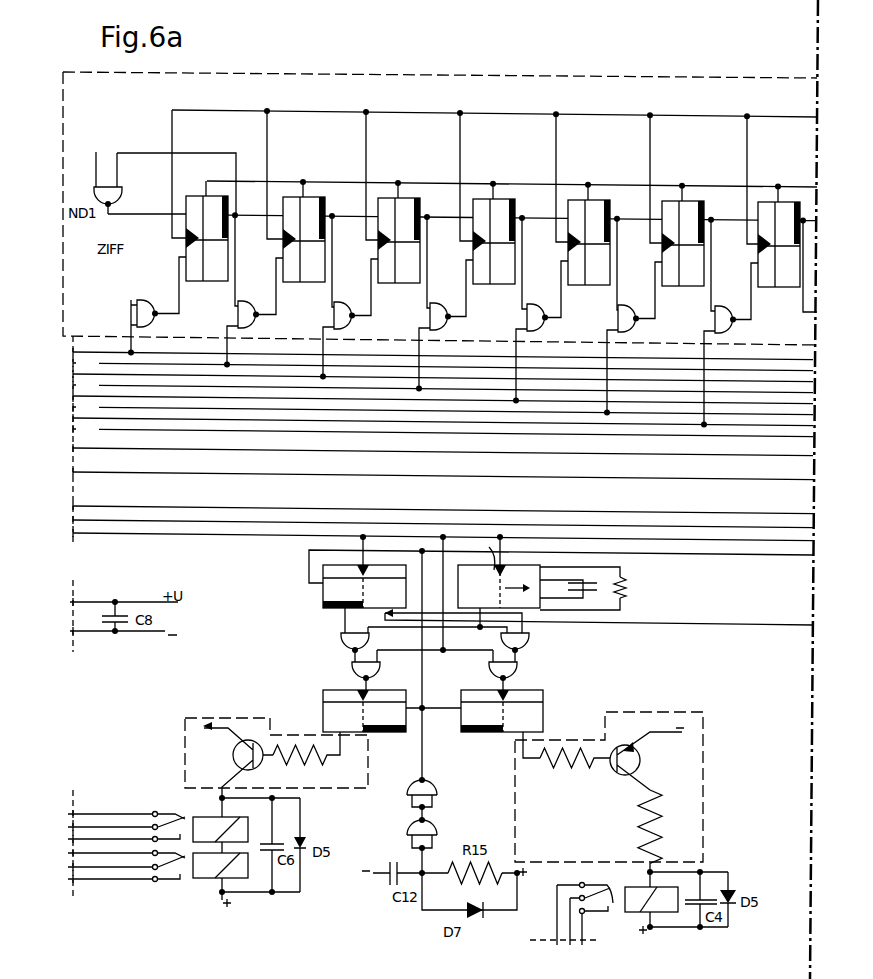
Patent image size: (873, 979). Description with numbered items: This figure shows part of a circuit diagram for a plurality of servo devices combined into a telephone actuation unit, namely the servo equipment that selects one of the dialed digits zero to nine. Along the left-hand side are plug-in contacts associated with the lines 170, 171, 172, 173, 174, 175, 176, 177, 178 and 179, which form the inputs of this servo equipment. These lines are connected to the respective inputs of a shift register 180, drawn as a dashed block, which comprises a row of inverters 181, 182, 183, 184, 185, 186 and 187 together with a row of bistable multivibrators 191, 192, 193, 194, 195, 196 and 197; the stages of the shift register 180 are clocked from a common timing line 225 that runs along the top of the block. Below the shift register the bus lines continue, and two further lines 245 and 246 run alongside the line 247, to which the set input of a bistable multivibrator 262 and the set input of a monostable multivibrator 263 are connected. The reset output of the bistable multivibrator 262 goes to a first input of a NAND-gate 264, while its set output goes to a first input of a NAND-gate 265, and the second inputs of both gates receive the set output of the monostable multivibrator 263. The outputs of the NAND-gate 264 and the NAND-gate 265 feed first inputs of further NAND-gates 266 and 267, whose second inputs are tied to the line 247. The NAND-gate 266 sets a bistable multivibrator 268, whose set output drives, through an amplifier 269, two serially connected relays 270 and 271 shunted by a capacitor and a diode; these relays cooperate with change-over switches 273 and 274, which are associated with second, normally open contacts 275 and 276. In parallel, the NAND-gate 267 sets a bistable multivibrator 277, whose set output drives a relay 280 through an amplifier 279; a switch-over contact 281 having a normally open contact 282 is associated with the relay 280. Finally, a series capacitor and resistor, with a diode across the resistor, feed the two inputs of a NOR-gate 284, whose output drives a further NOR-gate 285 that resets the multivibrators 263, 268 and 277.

The line 170 is at (430, 352).
The line 171 is at (443, 363).
The line 172 is at (430, 374).
The line 173 is at (443, 385).
The line 174 is at (430, 396).
The line 175 is at (443, 407).
The line 176 is at (430, 418).
The line 177 is at (443, 429).
The line 178 is at (430, 448).
The line 179 is at (443, 467).
The shift register 180 is at (648, 72).
The inverter 181 is at (158, 306).
The inverter 182 is at (256, 291).
The inverter 183 is at (352, 298).
The inverter 184 is at (448, 304).
The inverter 185 is at (545, 311).
The inverter 186 is at (636, 317).
The inverter 187 is at (733, 324).
The bistable multivibrator 191 is at (186, 270).
The bistable multivibrator 192 is at (283, 271).
The bistable multivibrator 193 is at (378, 272).
The bistable multivibrator 194 is at (473, 273).
The bistable multivibrator 195 is at (568, 274).
The bistable multivibrator 196 is at (662, 275).
The bistable multivibrator 197 is at (758, 276).
The timing line 225 is at (730, 117).
The signal line 245 is at (443, 501).
The signal line 246 is at (430, 520).
The line 247 is at (443, 544).
The bistable multivibrator 262 is at (398, 601).
The monostable multivibrator 263 is at (555, 579).
The NAND-gate 264 is at (344, 641).
The NAND-gate 265 is at (524, 648).
The NAND-gate 266 is at (352, 668).
The NAND-gate 267 is at (511, 671).
The bistable multivibrator 268 is at (356, 723).
The bistable multivibrator 277 is at (536, 723).
The amplifier 269 is at (214, 718).
The relay 270 is at (208, 826).
The relay 271 is at (206, 870).
The change-over switch 273 is at (168, 822).
The change-over switch 274 is at (170, 880).
The normally open contact 275 is at (153, 813).
The normally open contact 276 is at (179, 882).
The amplifier 279 is at (652, 712).
The relay 280 is at (665, 904).
The switch-over contact 281 is at (611, 904).
The normally open contact 282 is at (597, 915).
The NOR-gate 284 is at (435, 828).
The NOR-gate 285 is at (427, 789).